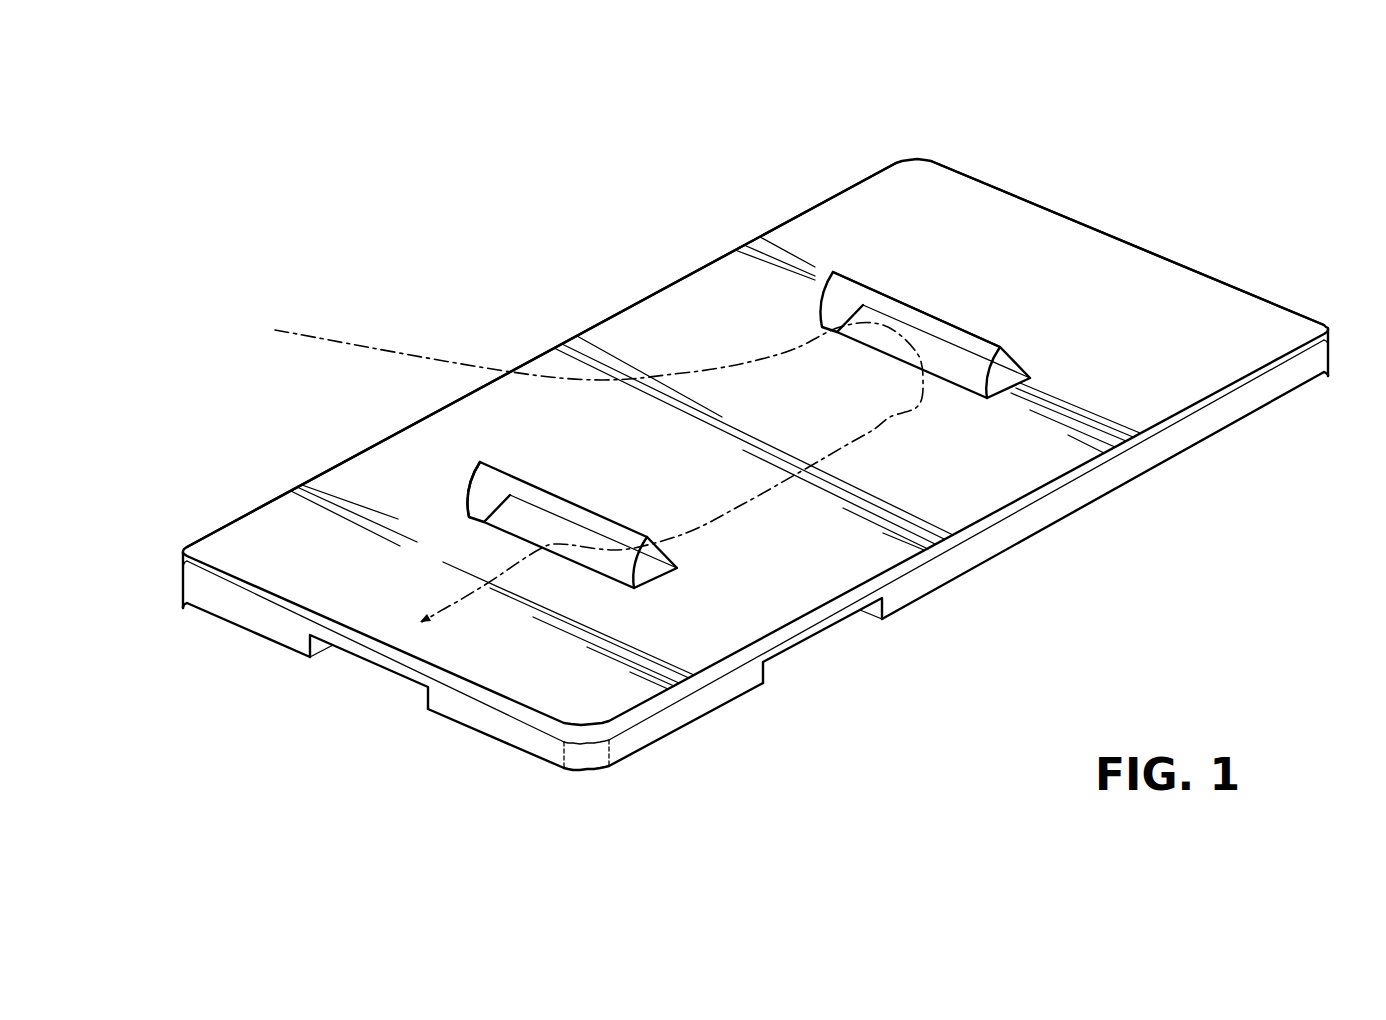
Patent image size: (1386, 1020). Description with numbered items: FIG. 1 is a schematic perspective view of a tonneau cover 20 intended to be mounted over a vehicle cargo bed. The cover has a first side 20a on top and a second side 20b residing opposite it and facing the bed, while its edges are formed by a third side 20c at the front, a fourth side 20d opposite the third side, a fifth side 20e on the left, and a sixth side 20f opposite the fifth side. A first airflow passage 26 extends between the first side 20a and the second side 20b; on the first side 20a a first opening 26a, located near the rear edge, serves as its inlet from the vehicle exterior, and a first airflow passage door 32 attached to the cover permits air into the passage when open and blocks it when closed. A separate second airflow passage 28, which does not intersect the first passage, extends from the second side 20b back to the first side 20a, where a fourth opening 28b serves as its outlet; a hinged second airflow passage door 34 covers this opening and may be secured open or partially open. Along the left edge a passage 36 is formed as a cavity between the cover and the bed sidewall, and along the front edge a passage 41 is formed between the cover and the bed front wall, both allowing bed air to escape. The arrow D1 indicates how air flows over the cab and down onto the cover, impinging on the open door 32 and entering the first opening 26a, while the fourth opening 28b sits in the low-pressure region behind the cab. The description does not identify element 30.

The tonneau cover 20 is at (702, 426).
The first side 20a is at (752, 334).
The second side 20b is at (1113, 491).
The third side 20c is at (193, 590).
The fourth side 20d is at (1102, 228).
The fifth side 20e is at (950, 563).
The sixth side 20f is at (627, 307).
The first airflow passage 26 is at (1013, 306).
The first opening 26a is at (945, 380).
The second airflow passage 28 is at (526, 570).
The fourth opening 28b is at (547, 537).
The front end of second protrusion 30 is at (663, 580).
The first airflow passage door 32 is at (917, 308).
The second airflow passage door 34 is at (493, 490).
The passage 36 is at (820, 630).
The passage 41 is at (403, 685).
The arrow D1 is at (355, 340).